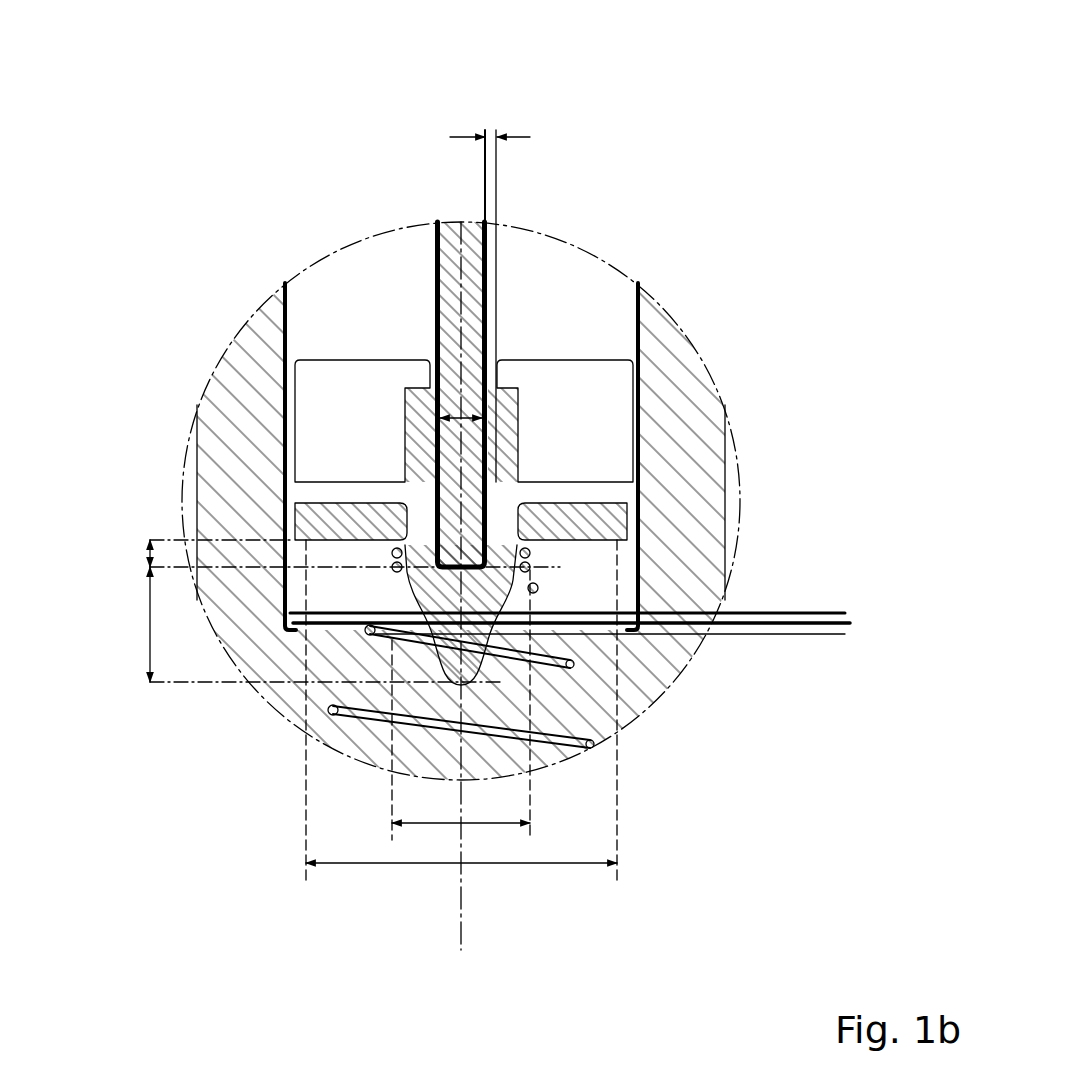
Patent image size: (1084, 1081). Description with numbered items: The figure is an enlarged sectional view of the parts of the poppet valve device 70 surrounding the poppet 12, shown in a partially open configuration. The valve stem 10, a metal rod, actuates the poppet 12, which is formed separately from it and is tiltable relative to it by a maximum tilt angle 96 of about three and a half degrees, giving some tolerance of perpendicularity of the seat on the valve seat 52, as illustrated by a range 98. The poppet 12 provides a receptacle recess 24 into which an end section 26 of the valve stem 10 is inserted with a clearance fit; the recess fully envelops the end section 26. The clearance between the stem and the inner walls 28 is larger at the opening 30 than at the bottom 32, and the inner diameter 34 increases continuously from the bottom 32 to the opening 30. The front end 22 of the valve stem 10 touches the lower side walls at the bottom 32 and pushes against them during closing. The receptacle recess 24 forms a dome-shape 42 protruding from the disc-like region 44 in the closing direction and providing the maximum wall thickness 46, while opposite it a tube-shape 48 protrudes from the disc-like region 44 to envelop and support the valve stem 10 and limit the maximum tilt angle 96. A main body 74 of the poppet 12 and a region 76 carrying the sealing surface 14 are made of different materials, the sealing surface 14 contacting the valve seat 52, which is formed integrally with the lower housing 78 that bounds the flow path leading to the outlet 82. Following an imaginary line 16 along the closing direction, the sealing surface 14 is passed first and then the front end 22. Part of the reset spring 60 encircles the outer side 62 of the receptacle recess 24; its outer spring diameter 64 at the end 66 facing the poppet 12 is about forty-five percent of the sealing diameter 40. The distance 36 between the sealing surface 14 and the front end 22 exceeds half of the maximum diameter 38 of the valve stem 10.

The valve stem 10 is at (453, 393).
The poppet 12 is at (638, 490).
The sealing surface 14 is at (335, 560).
The imaginary line 16 is at (466, 943).
The front end 22 is at (490, 608).
The receptacle recess 24 is at (466, 393).
The end section 26 is at (433, 430).
The inner walls 28 is at (390, 533).
The opening 30 is at (490, 440).
The bottom 32 is at (336, 716).
The inner diameter 34 is at (466, 578).
The distance 36 is at (150, 553).
The maximum diameter 38 is at (484, 436).
The sealing diameter 40 is at (355, 866).
The dome-shape 42 is at (492, 670).
The disc-like region 44 is at (502, 493).
The maximum wall thickness 46 is at (150, 625).
The tube-shape 48 is at (505, 440).
The valve seat 52 is at (292, 617).
The reset spring 60 is at (560, 685).
The outer side 62 is at (570, 592).
The outer spring diameter 64 is at (432, 826).
The end 66 is at (384, 559).
The poppet valve device 70 is at (747, 130).
The main body 74 is at (523, 500).
The region 76 is at (572, 542).
The lower housing 78 is at (675, 650).
The outlet 82 is at (575, 600).
The maximum tilt angle 96 is at (492, 130).
The range 98 is at (820, 628).